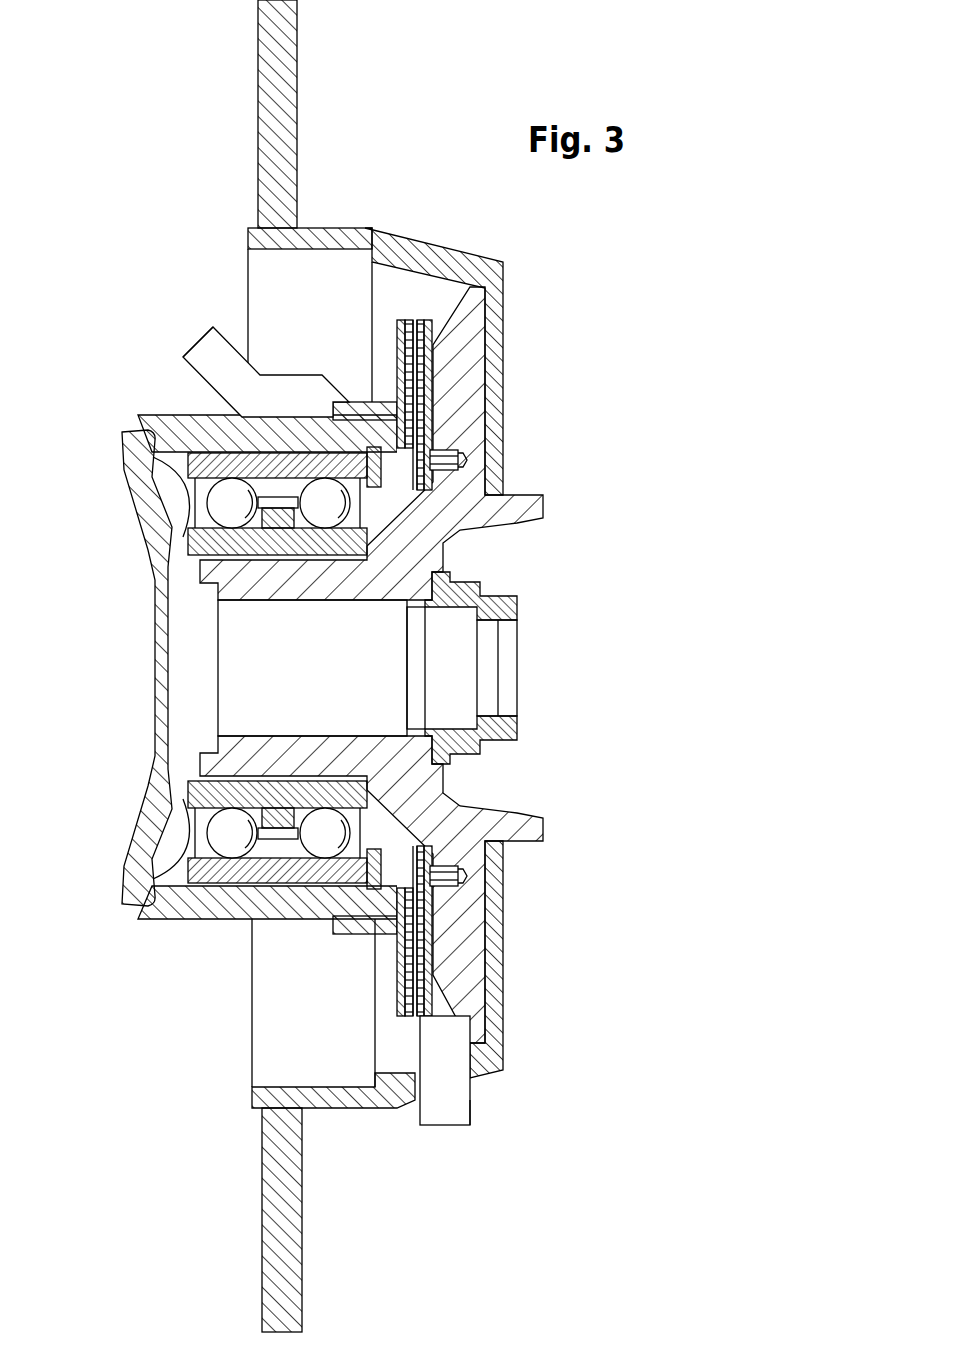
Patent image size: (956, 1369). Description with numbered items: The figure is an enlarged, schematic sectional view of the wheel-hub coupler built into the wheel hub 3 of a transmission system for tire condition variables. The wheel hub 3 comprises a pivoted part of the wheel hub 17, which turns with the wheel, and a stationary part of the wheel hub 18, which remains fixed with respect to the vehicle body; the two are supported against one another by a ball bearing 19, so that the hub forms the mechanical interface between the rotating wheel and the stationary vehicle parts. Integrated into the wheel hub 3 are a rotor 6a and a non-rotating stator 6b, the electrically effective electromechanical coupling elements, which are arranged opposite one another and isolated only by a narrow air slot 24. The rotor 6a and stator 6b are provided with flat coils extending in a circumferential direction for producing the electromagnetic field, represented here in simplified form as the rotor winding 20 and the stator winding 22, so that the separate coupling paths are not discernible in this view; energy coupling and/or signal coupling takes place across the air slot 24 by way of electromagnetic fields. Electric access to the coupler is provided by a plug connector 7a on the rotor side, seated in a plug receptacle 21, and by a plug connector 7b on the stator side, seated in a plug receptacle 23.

The wheel hub 3 is at (545, 422).
The rotor 6a is at (434, 318).
The stator 6b is at (415, 320).
The plug connector 7a is at (472, 1102).
The plug connector 7b is at (183, 352).
The pivoted part of the wheel hub 17 is at (466, 907).
The stationary part of the wheel hub 18 is at (183, 897).
The ball bearing 19 is at (233, 872).
The rotor winding 20 is at (433, 328).
The plug receptacle 21 is at (450, 1105).
The stator winding 22 is at (402, 320).
The plug receptacle 23 is at (221, 352).
The air slot 24 is at (414, 1017).